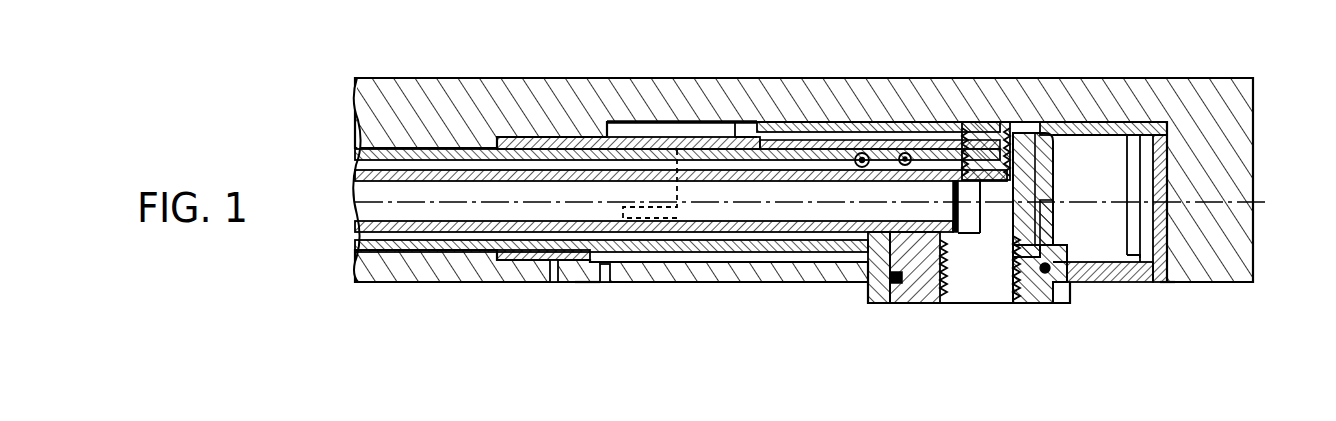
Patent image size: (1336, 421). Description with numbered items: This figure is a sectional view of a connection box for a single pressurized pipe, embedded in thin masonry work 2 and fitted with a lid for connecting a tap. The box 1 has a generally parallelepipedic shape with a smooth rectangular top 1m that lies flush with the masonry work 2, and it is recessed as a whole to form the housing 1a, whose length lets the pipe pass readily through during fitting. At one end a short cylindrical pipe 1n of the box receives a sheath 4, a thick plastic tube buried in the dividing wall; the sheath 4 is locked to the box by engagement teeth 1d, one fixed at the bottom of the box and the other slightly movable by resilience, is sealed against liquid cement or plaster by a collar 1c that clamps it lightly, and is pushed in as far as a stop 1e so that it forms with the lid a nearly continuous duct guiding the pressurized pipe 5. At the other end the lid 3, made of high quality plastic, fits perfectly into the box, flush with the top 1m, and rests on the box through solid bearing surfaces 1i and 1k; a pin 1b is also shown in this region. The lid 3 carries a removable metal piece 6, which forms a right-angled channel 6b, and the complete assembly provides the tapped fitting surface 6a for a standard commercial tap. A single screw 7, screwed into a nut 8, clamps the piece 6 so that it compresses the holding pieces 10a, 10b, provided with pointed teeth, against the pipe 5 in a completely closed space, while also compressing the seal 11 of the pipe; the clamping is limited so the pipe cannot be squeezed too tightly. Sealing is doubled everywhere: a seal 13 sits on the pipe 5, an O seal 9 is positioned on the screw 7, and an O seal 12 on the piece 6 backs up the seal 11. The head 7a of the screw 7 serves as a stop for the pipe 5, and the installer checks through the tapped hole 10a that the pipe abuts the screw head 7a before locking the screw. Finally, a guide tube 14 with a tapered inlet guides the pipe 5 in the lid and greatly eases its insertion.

The box 1 is at (1140, 122).
The housing 1a is at (1082, 284).
The sleeve pin 1b is at (545, 262).
The collar 1c is at (560, 283).
The engagement teeth 1d is at (677, 148).
The stop 1e is at (750, 135).
The solid bearing surface 1i is at (650, 283).
The solid bearing surface 1k is at (1145, 283).
The smooth rectangular top 1m is at (582, 283).
The short cylindrical pipe 1n is at (512, 262).
The masonry work 2 is at (1195, 95).
The lid 3 is at (1133, 283).
The sheath 4 is at (405, 250).
The pressurized pipe 5 is at (453, 250).
The removable metal piece 6 is at (1043, 297).
The tapped fitting surface 6a is at (1017, 285).
The right-angled channel 6b is at (969, 278).
The screw 7 is at (990, 130).
The screw head 7a is at (1056, 205).
The nut 8 is at (1060, 162).
The O seal 9 is at (1000, 125).
The holding piece 10a is at (870, 297).
The holding piece 10b is at (908, 152).
The seal 11 is at (925, 305).
The O seal 12 is at (885, 303).
The seal 13 is at (860, 152).
The guide tube 14 is at (820, 142).